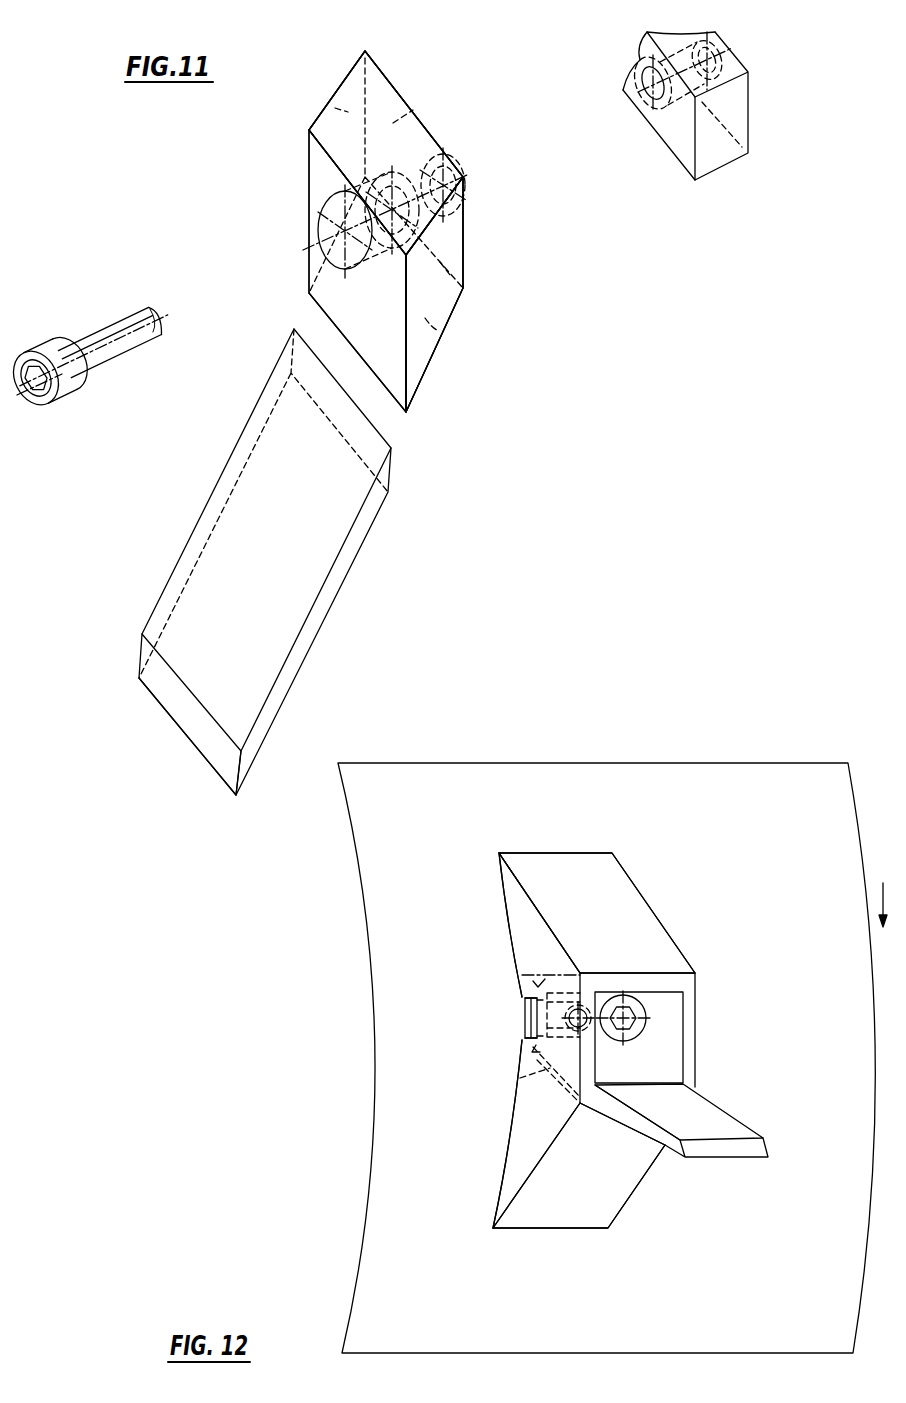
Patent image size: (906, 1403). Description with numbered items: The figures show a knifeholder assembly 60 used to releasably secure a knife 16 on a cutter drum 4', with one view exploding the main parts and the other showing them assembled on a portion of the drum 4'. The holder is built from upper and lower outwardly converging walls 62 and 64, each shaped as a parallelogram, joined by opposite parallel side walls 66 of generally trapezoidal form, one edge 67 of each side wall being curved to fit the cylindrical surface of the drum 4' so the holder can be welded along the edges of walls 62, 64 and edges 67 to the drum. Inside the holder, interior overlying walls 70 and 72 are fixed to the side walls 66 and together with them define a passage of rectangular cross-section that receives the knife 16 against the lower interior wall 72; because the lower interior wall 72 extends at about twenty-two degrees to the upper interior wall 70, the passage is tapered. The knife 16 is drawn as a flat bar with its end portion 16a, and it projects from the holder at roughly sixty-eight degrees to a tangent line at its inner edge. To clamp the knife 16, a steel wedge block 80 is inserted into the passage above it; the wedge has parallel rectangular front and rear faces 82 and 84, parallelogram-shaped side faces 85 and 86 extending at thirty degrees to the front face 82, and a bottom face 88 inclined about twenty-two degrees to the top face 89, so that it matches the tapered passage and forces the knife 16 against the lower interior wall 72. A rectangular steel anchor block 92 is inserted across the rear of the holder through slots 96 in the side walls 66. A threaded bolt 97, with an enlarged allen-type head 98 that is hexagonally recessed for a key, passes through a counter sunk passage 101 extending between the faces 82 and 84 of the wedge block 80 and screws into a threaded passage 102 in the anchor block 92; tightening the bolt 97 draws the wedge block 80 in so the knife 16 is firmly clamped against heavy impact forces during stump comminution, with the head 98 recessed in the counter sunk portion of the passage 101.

In FIG. 12, the cutter drum 4' is at (612, 1038).
In FIG. 11, the knife 16 is at (300, 599).
In FIG. 12, the knife 16 is at (720, 1120).
In FIG. 11, the end face of insert block 16a is at (212, 747).
In FIG. 12, the knifeholder assembly 60 is at (706, 967).
In FIG. 12, the upper wall 62 is at (638, 918).
In FIG. 12, the lower wall 64 is at (623, 1193).
In FIG. 12, the side wall 66 is at (530, 1133).
In FIG. 12, the curved edge 67 is at (517, 928).
In FIG. 12, the upper interior wall 70 is at (520, 975).
In FIG. 12, the lower interior wall 72 is at (520, 1078).
In FIG. 11, the wedge block 80 is at (470, 292).
In FIG. 12, the wedge block 80 is at (676, 1031).
In FIG. 11, the front face 82 is at (395, 367).
In FIG. 11, the rear face 84 is at (420, 113).
In FIG. 11, the side face 85 is at (330, 112).
In FIG. 11, the side face 86 is at (448, 270).
In FIG. 11, the bottom face 88 is at (427, 320).
In FIG. 11, the top face 89 is at (415, 142).
In FIG. 11, the anchor block 92 is at (715, 33).
In FIG. 12, the anchor block 92 is at (527, 1013).
In FIG. 12, the slot 96 is at (523, 1037).
In FIG. 11, the bolt 97 is at (108, 330).
In FIG. 11, the head 98 is at (38, 405).
In FIG. 12, the head 98 is at (643, 1030).
In FIG. 11, the counter sunk passage 101 is at (327, 223).
In FIG. 11, the threaded passage 102 is at (653, 100).